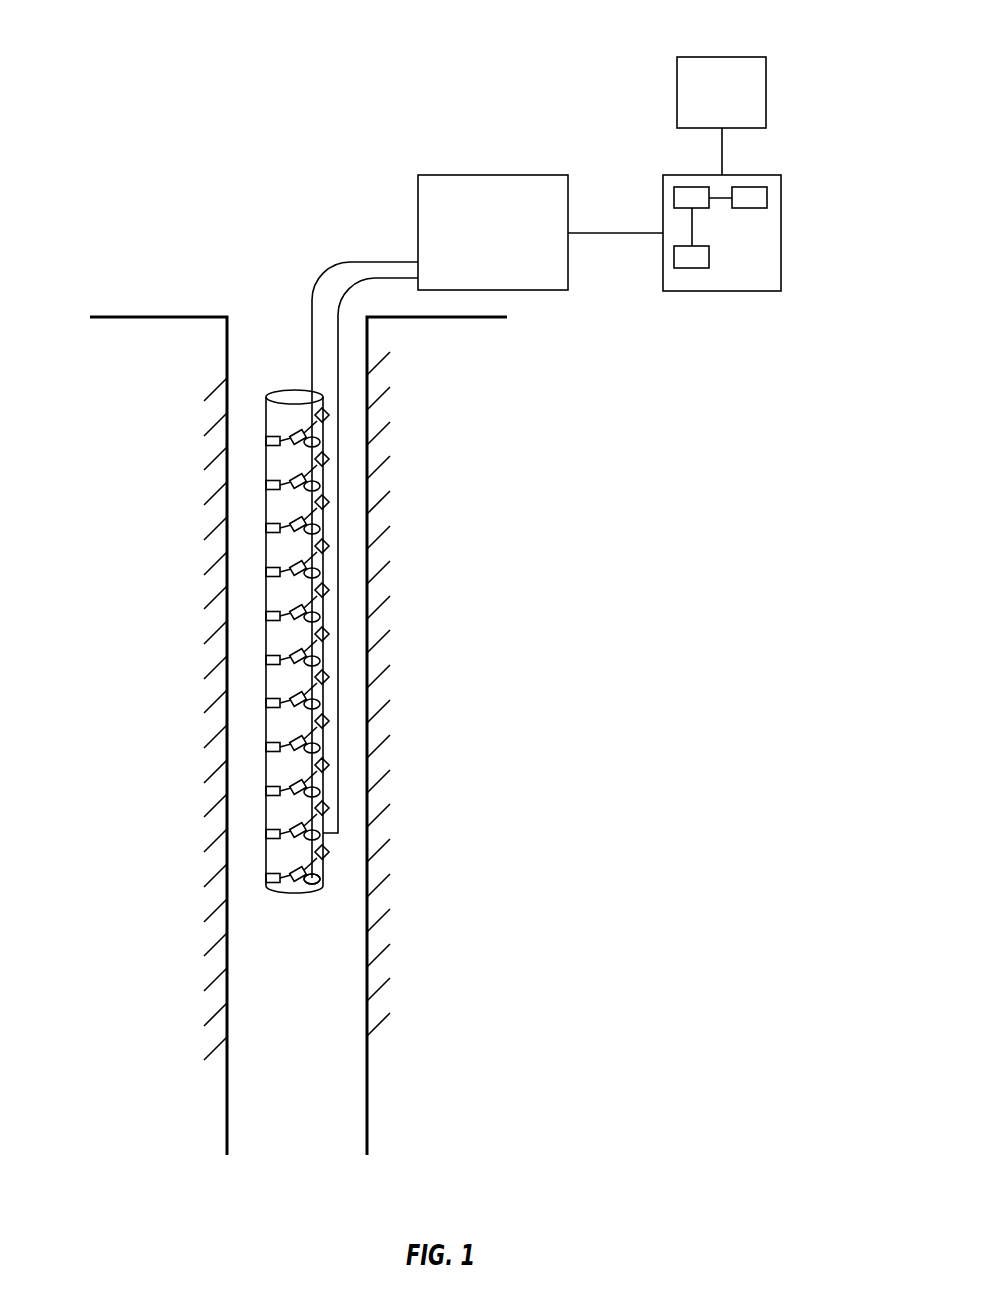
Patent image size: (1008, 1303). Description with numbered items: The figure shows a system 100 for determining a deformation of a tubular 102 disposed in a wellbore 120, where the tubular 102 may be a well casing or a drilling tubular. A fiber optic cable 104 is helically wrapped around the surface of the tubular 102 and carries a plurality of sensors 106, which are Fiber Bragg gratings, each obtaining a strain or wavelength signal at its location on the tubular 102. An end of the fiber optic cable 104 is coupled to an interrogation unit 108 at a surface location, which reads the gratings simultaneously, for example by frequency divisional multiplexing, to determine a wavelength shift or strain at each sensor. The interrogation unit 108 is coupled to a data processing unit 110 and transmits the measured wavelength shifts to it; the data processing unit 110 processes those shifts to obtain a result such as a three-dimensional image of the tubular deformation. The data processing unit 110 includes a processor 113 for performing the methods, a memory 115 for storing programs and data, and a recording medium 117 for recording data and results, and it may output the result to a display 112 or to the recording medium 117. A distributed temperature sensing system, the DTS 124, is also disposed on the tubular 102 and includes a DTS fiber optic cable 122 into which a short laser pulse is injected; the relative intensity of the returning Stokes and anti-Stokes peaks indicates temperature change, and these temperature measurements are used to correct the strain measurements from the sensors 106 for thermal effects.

The system 100 is at (141, 36).
The tubular 102 is at (266, 566).
The fiber optic cable 104 is at (345, 373).
The sensors 106 is at (266, 441).
The interrogation unit 108 is at (418, 190).
The data processing unit 110 is at (733, 291).
The display 112 is at (766, 76).
The processor 113 is at (674, 258).
The memory 115 is at (674, 196).
The recording medium 117 is at (767, 198).
The wellbore 120 is at (350, 508).
The DTS fiber optic cable 122 is at (318, 283).
The DTS 124 is at (318, 880).